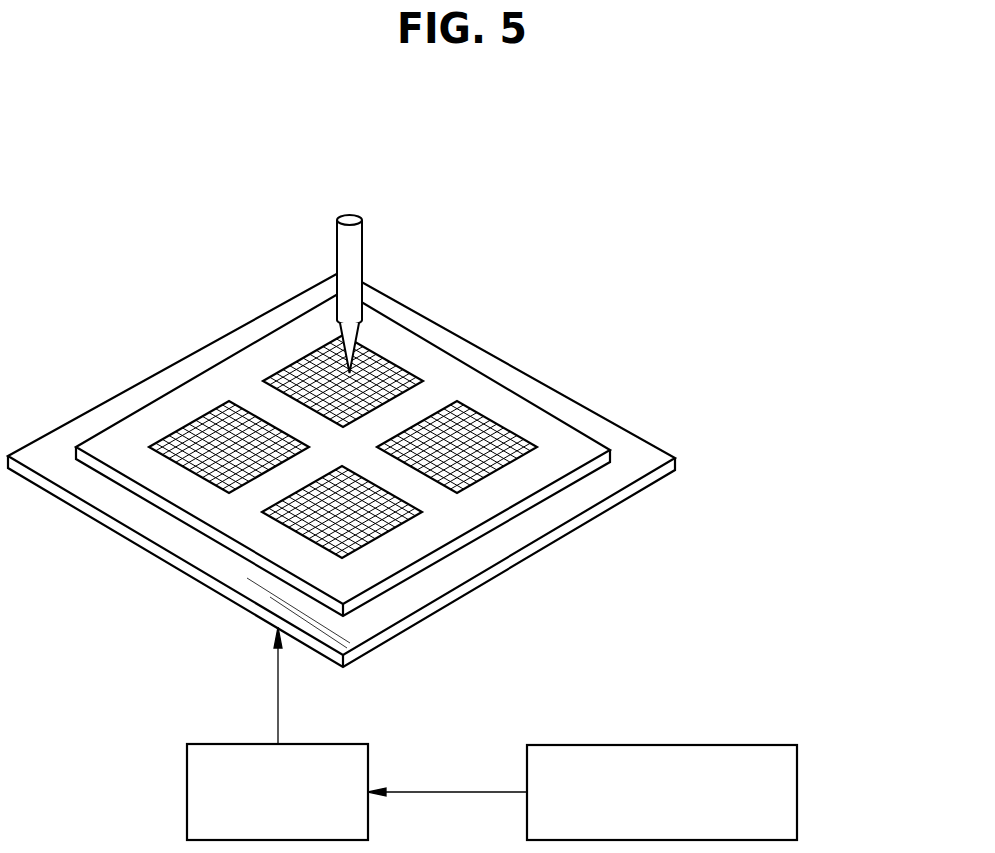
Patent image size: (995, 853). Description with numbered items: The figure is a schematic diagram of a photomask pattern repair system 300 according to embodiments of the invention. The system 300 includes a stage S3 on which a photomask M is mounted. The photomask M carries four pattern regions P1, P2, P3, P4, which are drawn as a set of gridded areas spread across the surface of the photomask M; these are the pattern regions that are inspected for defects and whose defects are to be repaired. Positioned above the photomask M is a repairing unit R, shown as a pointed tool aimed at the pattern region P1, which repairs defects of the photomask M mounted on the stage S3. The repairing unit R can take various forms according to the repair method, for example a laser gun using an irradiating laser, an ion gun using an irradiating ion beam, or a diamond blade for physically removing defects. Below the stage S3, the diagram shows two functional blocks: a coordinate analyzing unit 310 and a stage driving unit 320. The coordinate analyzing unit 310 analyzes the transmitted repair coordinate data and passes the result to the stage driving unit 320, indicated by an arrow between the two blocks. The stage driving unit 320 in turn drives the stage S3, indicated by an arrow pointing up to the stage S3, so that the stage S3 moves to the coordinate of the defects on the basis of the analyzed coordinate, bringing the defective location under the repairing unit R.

The photomask pattern repair system 300 is at (365, 104).
The repairing unit R is at (356, 238).
The photomask M is at (215, 377).
The pattern region P1 is at (298, 362).
The pattern region P2 is at (530, 453).
The pattern region P3 is at (185, 433).
The pattern region P4 is at (390, 525).
The stage S3 is at (185, 541).
The coordinate analyzing unit 310 is at (797, 790).
The stage driving unit 320 is at (187, 790).